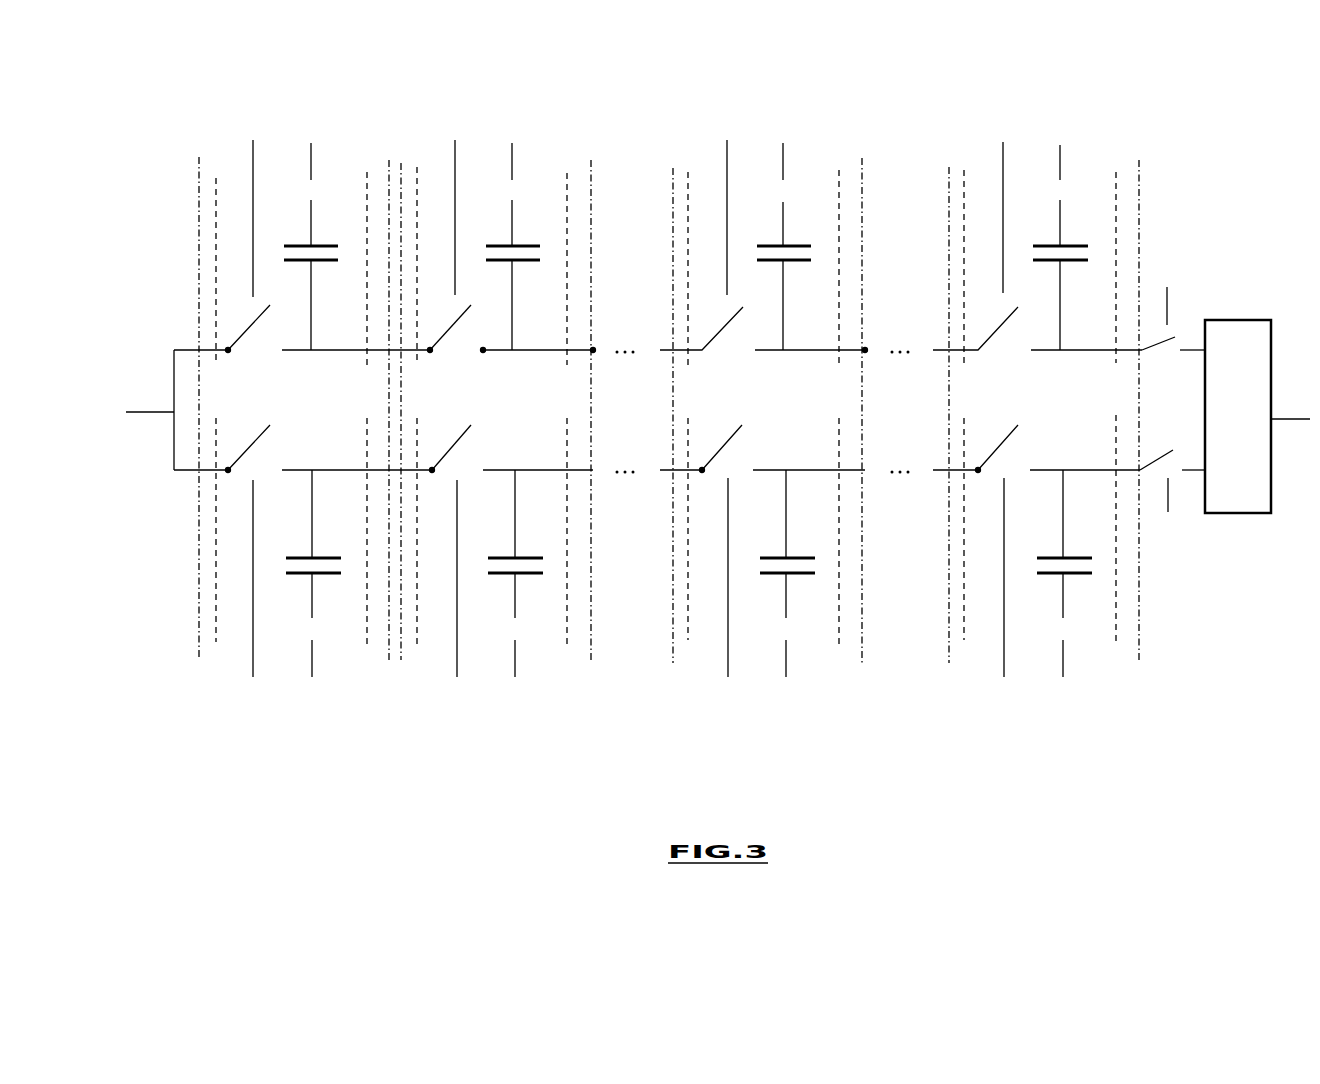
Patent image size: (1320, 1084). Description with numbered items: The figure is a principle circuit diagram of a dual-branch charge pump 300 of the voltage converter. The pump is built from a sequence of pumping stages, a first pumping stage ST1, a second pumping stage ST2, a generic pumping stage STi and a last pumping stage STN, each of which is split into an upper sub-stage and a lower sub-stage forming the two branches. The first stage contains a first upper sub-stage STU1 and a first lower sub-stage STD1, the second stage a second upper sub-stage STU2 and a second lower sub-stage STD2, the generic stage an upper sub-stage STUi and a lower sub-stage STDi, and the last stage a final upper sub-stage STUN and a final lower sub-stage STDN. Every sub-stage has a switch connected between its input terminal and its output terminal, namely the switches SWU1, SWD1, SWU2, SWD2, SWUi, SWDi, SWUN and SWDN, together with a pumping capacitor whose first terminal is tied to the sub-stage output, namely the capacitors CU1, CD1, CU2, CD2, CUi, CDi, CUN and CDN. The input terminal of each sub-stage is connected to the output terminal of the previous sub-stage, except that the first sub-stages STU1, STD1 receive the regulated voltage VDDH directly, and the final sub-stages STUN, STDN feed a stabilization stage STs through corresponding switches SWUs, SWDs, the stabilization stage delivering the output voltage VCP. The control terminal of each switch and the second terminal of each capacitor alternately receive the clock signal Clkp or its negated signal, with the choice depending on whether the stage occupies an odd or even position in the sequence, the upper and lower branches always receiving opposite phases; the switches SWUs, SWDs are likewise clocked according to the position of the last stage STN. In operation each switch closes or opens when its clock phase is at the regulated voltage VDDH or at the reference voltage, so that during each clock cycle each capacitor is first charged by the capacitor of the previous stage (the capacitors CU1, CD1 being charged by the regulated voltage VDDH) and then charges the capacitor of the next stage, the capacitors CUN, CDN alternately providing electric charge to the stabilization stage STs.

The dual-branch charge pump 300 is at (193, 92).
The regulated voltage VDDH is at (140, 399).
The charge pump output voltage VCP is at (1294, 403).
The clock signal Clkp is at (1037, 708).
The first pumping stage ST1 is at (200, 291).
The second pumping stage ST2 is at (565, 158).
The pumping stage STi is at (693, 152).
The last pumping stage STN is at (970, 153).
The stabilization stage STs is at (1238, 416).
The first upper sub-stage STU1 is at (216, 174).
The first lower sub-stage STD1 is at (212, 655).
The second upper sub-stage STU2 is at (420, 168).
The second lower sub-stage STD2 is at (410, 655).
The upper sub-stage STUi is at (688, 175).
The lower sub-stage STDi is at (682, 655).
The final upper sub-stage STUN is at (965, 173).
The final lower sub-stage STDN is at (960, 653).
The first upper switch SWU1 is at (258, 337).
The first lower switch SWD1 is at (255, 430).
The second upper switch SWU2 is at (462, 335).
The second lower switch SWD2 is at (457, 430).
The upper switch SWUi is at (735, 335).
The lower switch SWDi is at (727, 430).
The final upper switch SWUN is at (1010, 335).
The final lower switch SWDN is at (1002, 430).
The upper stabilization switch SWUs is at (1160, 355).
The lower stabilization switch SWDs is at (1175, 458).
The first upper pumping capacitor CU1 is at (298, 246).
The first lower pumping capacitor CD1 is at (324, 573).
The second upper pumping capacitor CU2 is at (502, 246).
The second lower pumping capacitor CD2 is at (526, 573).
The upper pumping capacitor CUi is at (774, 246).
The lower pumping capacitor CDi is at (796, 573).
The final upper pumping capacitor CUN is at (1049, 247).
The final lower pumping capacitor CDN is at (1075, 573).